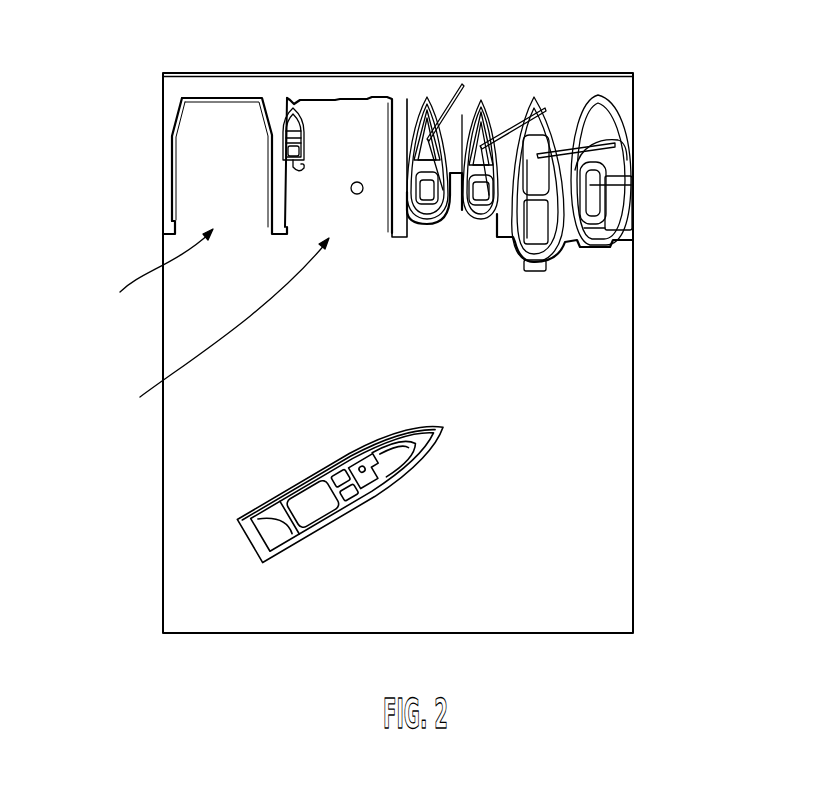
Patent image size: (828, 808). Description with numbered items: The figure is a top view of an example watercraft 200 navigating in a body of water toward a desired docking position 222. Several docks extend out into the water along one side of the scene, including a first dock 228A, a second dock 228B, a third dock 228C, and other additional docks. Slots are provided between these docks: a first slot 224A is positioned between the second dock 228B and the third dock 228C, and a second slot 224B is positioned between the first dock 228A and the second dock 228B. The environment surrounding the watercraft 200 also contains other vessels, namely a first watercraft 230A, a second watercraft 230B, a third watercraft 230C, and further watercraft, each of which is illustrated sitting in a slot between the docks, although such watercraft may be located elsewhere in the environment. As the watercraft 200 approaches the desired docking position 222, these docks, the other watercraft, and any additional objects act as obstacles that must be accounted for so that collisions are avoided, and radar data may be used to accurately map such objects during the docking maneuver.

The watercraft 200 is at (413, 470).
The desired docking position 222 is at (355, 182).
The first slot 224A is at (217, 337).
The second slot 224B is at (143, 277).
The first dock 228A is at (163, 203).
The second dock 228B is at (283, 240).
The third dock 228C is at (397, 238).
The first watercraft 230A is at (293, 108).
The second watercraft 230B is at (427, 225).
The third watercraft 230C is at (475, 225).